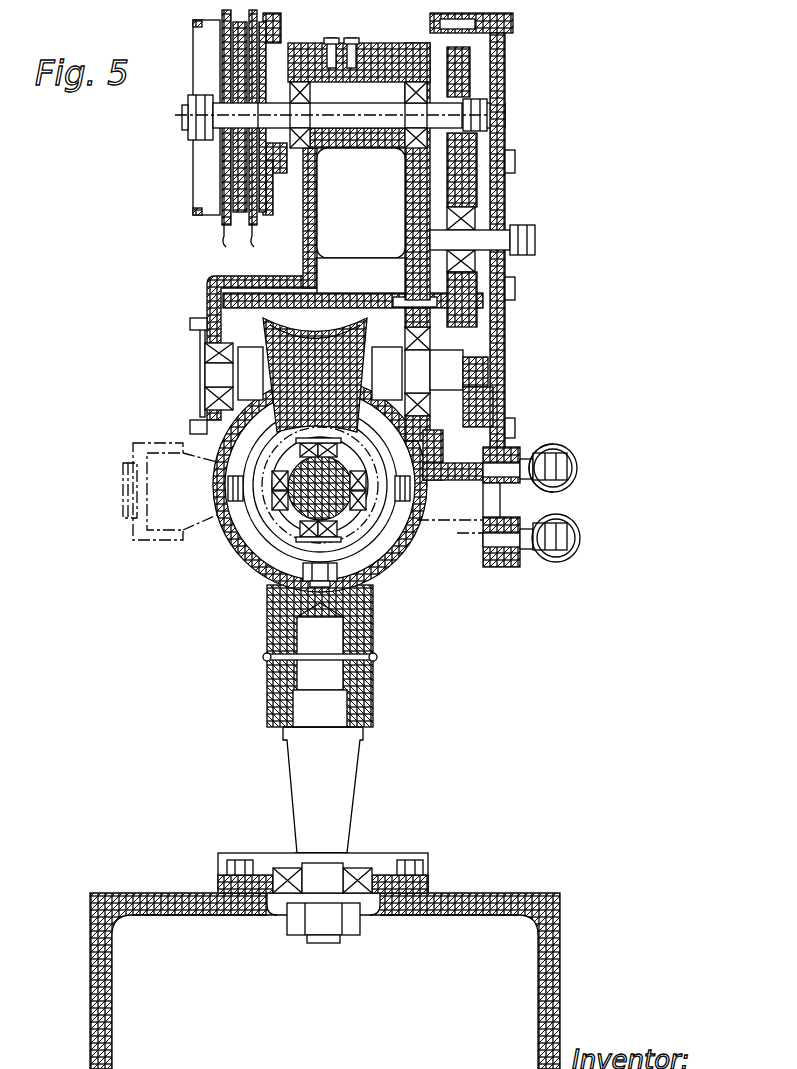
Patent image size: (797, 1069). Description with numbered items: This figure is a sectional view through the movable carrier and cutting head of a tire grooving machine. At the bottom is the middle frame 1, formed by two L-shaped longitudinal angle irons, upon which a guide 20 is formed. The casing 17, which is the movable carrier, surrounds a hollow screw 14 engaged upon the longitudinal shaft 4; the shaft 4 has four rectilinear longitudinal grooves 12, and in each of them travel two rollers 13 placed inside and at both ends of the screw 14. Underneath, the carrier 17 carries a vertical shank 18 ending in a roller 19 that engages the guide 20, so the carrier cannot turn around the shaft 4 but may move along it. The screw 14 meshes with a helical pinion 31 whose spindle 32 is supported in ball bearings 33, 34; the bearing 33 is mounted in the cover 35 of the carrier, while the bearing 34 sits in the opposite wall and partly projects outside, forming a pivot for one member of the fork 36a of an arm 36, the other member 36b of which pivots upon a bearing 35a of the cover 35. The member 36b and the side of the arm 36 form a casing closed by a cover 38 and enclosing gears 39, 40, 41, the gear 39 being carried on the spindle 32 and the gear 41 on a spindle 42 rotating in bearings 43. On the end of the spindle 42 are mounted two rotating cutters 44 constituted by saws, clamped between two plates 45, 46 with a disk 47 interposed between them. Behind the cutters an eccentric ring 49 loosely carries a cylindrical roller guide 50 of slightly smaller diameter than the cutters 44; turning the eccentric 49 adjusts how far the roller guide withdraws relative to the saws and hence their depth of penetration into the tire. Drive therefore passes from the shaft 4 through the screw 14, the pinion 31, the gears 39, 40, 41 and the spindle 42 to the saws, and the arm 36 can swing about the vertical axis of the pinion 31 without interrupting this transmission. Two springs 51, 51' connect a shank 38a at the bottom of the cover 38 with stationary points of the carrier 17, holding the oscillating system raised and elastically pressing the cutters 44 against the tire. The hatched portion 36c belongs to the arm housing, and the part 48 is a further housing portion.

The middle frame 1 is at (162, 905).
The longitudinal shaft 4 is at (290, 513).
The rectilinear longitudinal grooves 12 is at (336, 572).
The rollers 13 is at (370, 522).
The hollow screw 14 is at (265, 533).
The casing 17 is at (398, 556).
The vertical shank 18 is at (323, 793).
The roller 19 is at (287, 890).
The guide 20 is at (383, 877).
The helical pinion 31 is at (277, 340).
The spindle 32 is at (320, 373).
The ball bearing 33 is at (417, 371).
The ball bearing 34 is at (205, 353).
The cover 35 is at (470, 413).
The bearing 35a is at (480, 300).
The arm 36 is at (405, 38).
The fork 36a is at (207, 293).
The fork member 36b is at (408, 277).
The housing boss 36c is at (467, 463).
The cover 38 is at (505, 127).
The shank 38a is at (520, 500).
The gear 39 is at (467, 330).
The gear 40 is at (470, 193).
The gear 41 is at (470, 70).
The spindle 42 is at (340, 115).
The bearings 43 is at (361, 203).
The rotating cutters 44 is at (237, 240).
The plate 45 is at (270, 236).
The plate 46 is at (202, 160).
The disk 47 is at (235, 28).
The housing cover 48 is at (290, 53).
The eccentric ring 49 is at (300, 32).
The cylindrical roller guide 50 is at (285, 208).
The spring 51 is at (565, 465).
The spring 51' is at (569, 530).